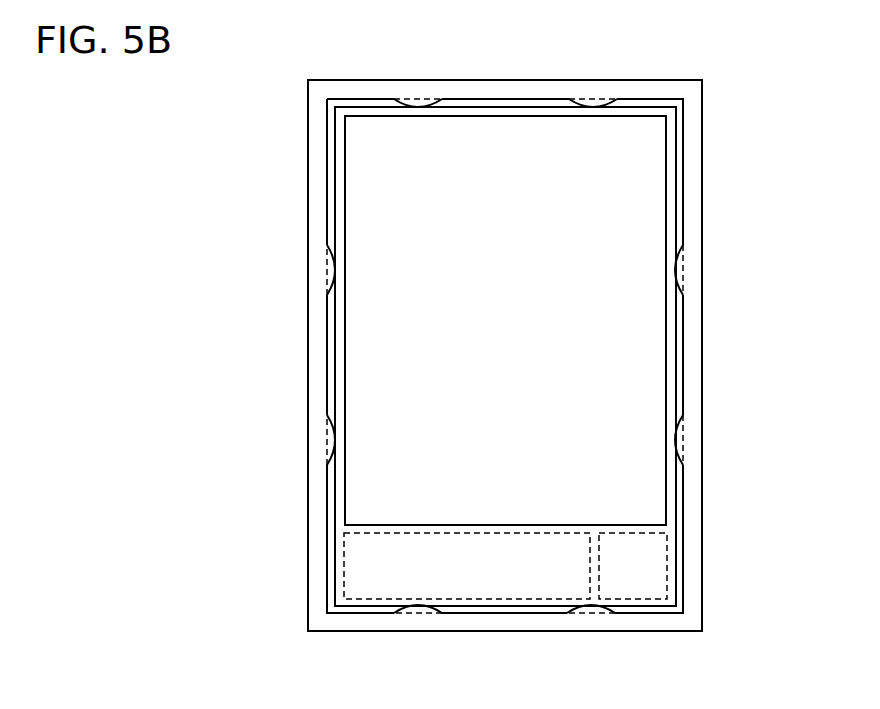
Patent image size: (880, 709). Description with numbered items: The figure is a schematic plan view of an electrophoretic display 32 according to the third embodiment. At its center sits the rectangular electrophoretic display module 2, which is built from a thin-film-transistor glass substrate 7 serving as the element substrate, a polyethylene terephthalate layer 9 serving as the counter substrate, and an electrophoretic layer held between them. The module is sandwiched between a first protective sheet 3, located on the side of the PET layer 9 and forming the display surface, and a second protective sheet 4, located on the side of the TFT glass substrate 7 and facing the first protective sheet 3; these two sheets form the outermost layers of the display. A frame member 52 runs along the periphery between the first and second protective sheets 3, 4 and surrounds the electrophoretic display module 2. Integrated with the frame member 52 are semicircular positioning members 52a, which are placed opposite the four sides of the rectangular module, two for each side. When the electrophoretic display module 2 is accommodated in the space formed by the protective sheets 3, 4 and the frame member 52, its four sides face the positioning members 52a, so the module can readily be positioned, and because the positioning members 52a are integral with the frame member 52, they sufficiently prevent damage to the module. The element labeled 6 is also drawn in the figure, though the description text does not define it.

The electrophoretic display 32 is at (300, 72).
The electrophoretic display module 2 is at (694, 190).
The first protective sheet 3 is at (397, 197).
The second protective sheet 4 is at (408, 325).
The housing 6 is at (331, 518).
The thin-film-transistor glass substrate 7 is at (625, 107).
The polyethylene terephthalate layer 9 is at (519, 113).
The frame member 52 is at (316, 383).
The positioning members 52a is at (417, 97).